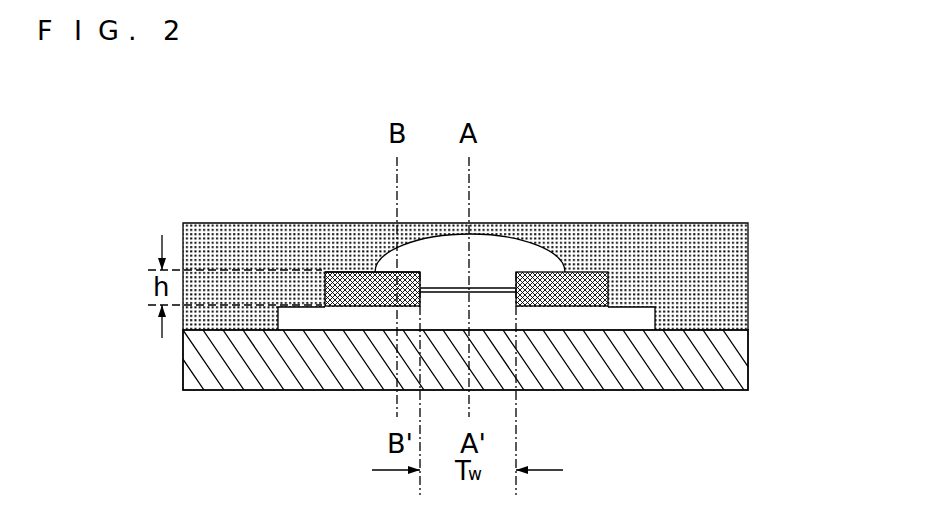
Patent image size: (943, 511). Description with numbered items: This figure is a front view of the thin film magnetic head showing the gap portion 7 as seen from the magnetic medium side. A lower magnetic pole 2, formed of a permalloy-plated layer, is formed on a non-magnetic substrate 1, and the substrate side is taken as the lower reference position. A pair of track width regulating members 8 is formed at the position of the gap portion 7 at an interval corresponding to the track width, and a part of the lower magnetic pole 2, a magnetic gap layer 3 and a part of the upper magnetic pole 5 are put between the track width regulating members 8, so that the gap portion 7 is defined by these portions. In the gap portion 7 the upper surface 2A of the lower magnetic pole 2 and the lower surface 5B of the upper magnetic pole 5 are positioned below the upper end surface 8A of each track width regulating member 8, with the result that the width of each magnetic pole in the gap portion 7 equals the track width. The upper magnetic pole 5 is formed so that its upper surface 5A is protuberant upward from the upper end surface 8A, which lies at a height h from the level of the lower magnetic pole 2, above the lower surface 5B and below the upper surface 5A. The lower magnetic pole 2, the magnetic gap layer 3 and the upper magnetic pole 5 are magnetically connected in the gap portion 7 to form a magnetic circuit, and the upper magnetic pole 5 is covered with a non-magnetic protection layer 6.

The non-magnetic substrate 1 is at (727, 340).
The lower magnetic pole 2 is at (633, 317).
The upper surface of the lower magnetic pole 2A is at (493, 300).
The magnetic gap layer 3 is at (428, 269).
The upper magnetic pole 5 is at (493, 263).
The upper surface of the upper magnetic pole 5A is at (457, 285).
The lower surface of the upper magnetic pole 5B is at (478, 284).
The non-magnetic protection layer 6 is at (613, 237).
The gap portion 7 is at (404, 269).
The track width regulating members 8 is at (598, 283).
The upper end surface of the track width regulating member 8A is at (398, 270).